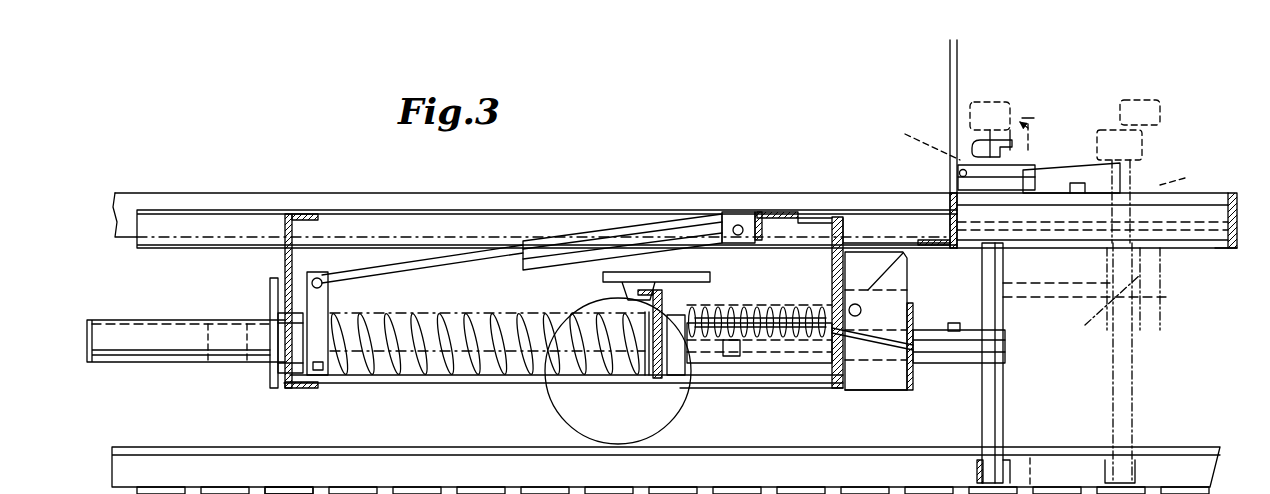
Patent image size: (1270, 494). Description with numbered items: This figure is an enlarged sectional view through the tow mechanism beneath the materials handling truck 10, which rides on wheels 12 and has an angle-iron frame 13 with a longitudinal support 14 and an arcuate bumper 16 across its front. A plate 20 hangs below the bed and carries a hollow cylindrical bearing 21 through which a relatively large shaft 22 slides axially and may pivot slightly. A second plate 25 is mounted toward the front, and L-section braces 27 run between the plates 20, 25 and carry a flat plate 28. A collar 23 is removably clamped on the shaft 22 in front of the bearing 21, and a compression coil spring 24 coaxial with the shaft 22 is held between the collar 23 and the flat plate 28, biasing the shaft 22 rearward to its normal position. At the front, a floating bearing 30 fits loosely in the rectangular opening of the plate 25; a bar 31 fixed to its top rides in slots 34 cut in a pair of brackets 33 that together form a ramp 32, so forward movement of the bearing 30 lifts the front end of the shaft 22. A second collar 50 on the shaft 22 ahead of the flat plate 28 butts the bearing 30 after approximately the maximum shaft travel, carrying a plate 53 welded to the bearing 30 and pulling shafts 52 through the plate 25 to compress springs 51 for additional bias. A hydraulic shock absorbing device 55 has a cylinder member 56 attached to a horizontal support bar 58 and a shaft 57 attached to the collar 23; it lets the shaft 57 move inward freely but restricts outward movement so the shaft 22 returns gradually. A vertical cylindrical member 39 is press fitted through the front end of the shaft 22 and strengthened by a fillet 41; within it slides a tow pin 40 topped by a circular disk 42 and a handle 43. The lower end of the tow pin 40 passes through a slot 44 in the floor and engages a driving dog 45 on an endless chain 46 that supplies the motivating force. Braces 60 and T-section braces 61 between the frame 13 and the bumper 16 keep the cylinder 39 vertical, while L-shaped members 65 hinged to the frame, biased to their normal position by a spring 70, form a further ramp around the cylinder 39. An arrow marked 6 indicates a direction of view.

The materials handling truck 10 is at (210, 188).
The wheels 12 is at (678, 412).
The frame 13 is at (675, 193).
The support 14 is at (853, 210).
The bumper 16 is at (1232, 250).
The plate 20 is at (284, 262).
The bearing 21 is at (275, 356).
The shaft 22 is at (250, 328).
The collar 23 is at (308, 378).
The compression coil spring 24 is at (393, 378).
The second plate 25 is at (826, 216).
The braces 27 is at (752, 380).
The flat plate 28 is at (655, 380).
The floating bearing 30 is at (820, 378).
The bar 31 is at (857, 304).
The ramp 32 is at (900, 394).
The brackets 33 is at (875, 392).
The slot 34 is at (880, 300).
The cylindrical member 39 is at (1003, 270).
The tow pin 40 is at (1004, 417).
The fillet 41 is at (960, 328).
The circular disk 42 is at (905, 134).
The handle 43 is at (975, 143).
The slot 44 is at (1212, 447).
The driving dog 45 is at (975, 470).
The endless chain 46 is at (296, 487).
The second collar 50 is at (672, 378).
The compression springs 51 is at (742, 307).
The shafts 52 is at (770, 312).
The plate 53 is at (915, 383).
The hydraulic shock absorbing device 55 is at (618, 228).
The cylinder member 56 is at (648, 228).
The shaft 57 is at (415, 263).
The horizontal support bar 58 is at (775, 210).
The braces 60 is at (1222, 193).
The braces 61 is at (1078, 184).
The members 65 is at (1056, 168).
The spring 70 is at (960, 172).
The section view arrow 6 is at (1033, 119).